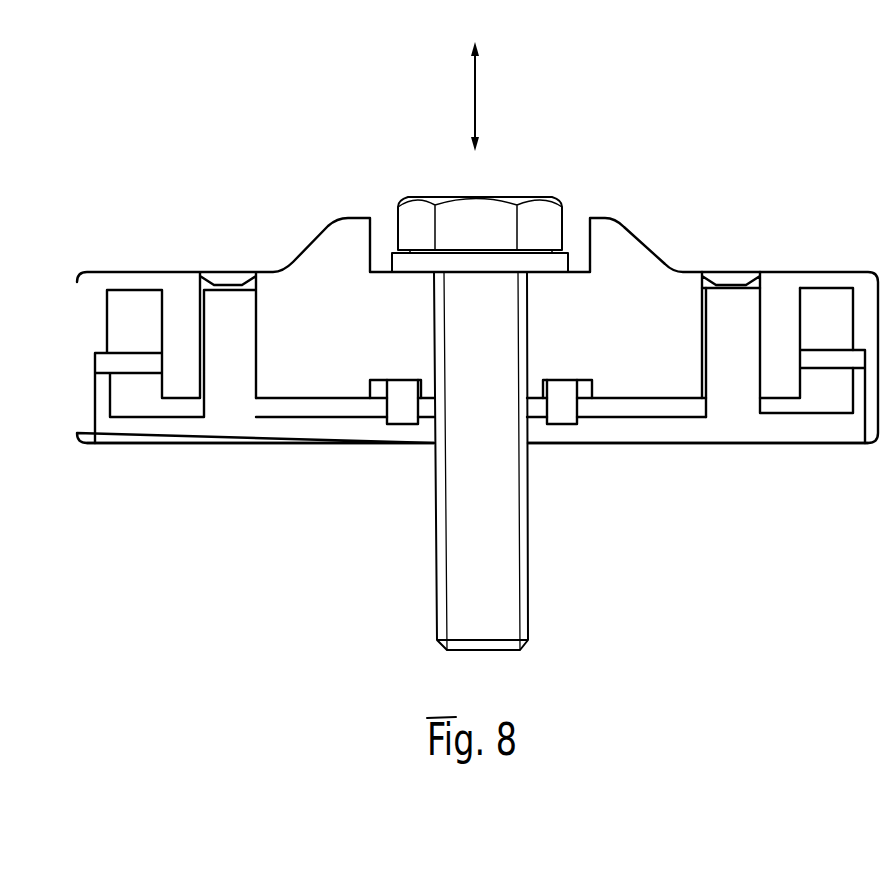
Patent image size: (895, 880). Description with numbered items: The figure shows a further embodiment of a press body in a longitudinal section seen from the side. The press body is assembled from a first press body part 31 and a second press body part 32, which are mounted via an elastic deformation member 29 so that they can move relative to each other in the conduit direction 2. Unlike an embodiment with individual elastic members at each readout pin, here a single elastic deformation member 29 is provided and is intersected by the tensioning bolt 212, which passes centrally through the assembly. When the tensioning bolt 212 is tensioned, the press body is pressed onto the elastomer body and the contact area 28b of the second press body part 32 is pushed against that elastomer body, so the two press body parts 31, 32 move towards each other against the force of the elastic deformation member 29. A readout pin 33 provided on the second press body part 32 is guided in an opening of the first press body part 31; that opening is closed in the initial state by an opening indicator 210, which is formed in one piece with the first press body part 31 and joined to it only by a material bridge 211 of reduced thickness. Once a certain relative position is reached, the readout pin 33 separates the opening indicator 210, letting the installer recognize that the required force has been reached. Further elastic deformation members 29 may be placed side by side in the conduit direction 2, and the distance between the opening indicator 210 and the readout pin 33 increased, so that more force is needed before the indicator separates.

The conduit direction 2 is at (475, 100).
The first press body part 31 is at (621, 297).
The opening indicator 210 is at (725, 278).
The material bridge 211 is at (767, 264).
The readout pin 33 is at (727, 332).
The second press body part 32 is at (606, 430).
The elastic deformation member 29 is at (400, 403).
The contact area 28b is at (588, 462).
The tensioning bolt 212 is at (467, 315).